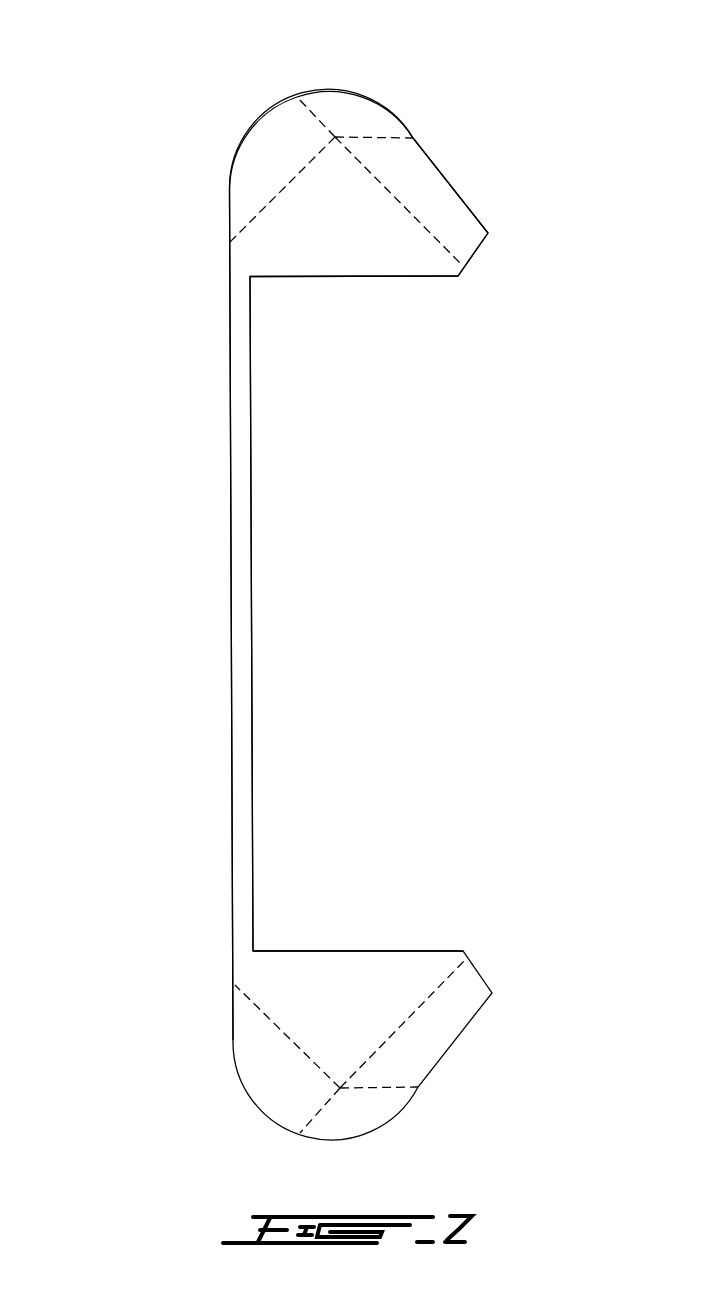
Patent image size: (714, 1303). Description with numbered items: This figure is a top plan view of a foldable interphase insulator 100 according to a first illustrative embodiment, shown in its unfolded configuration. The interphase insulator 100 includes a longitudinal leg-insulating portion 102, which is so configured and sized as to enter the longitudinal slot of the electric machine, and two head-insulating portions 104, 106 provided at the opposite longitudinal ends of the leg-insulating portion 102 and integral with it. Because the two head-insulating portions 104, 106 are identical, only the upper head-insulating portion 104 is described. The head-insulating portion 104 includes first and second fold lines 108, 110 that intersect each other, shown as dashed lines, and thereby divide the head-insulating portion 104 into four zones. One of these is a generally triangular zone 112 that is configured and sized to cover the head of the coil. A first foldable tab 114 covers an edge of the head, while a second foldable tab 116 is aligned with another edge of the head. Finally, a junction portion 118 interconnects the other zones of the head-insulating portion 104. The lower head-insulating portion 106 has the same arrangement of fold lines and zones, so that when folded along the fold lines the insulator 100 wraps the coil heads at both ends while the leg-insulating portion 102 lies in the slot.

The interphase insulator 100 is at (176, 600).
The leg-insulating portion 102 is at (251, 685).
The head-insulating portion 104 is at (338, 278).
The head-insulating portion 106 is at (351, 940).
The first fold line 108 is at (424, 227).
The second fold line 110 is at (268, 205).
The generally triangular zone 112 is at (377, 240).
The first foldable tab 114 is at (422, 175).
The second foldable tab 116 is at (267, 150).
The junction portion 118 is at (352, 118).